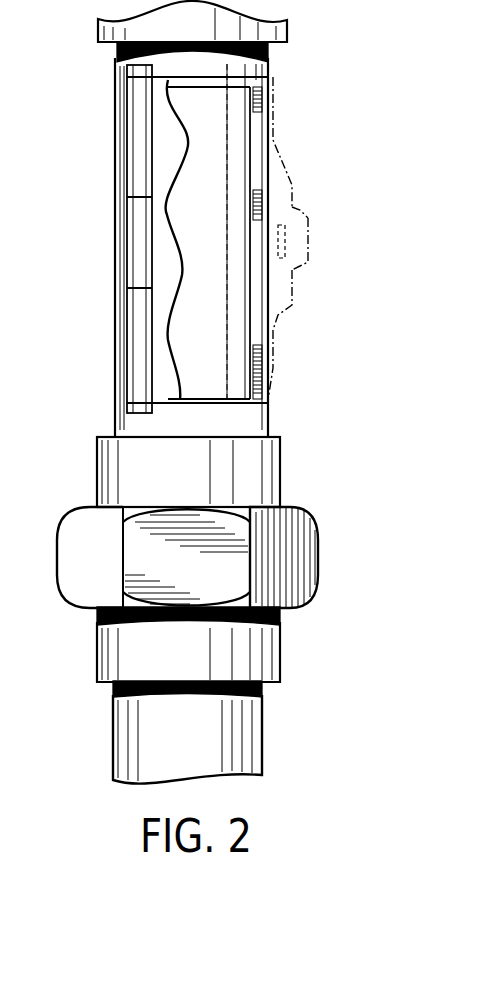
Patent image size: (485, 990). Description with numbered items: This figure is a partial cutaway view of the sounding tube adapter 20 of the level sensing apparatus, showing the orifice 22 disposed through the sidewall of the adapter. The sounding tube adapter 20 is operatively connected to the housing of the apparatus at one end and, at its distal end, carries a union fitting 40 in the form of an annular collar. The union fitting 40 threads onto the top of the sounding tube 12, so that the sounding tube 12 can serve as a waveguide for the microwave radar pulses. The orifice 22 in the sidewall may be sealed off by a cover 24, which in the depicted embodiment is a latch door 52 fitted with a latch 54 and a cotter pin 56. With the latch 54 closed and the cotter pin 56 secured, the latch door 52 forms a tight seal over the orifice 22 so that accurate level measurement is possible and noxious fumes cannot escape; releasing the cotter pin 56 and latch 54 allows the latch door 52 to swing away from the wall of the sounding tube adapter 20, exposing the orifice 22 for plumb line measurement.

The sounding tube 12 is at (150, 748).
The sounding tube adapter 20 is at (224, 313).
The orifice 22 is at (208, 363).
The cover 24 is at (329, 238).
The union fitting 40 is at (255, 657).
The latch door 52 is at (280, 312).
The latch 54 is at (318, 240).
The cotter pin 56 is at (298, 210).